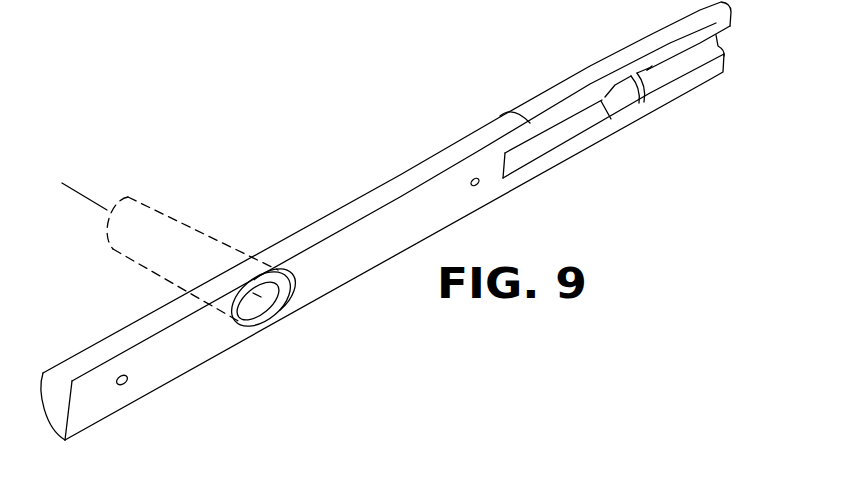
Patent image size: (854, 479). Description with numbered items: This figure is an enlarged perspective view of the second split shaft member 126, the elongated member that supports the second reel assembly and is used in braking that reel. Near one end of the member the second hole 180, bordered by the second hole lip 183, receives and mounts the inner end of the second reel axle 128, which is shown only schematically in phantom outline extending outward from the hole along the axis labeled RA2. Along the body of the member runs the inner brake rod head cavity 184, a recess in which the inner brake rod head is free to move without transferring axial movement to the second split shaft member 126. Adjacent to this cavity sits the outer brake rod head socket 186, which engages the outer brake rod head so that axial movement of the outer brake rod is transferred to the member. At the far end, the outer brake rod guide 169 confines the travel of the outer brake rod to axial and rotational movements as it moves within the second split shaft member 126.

The second split shaft member 126 is at (437, 197).
The second reel axle 128 is at (198, 214).
The rotation axis RA2 is at (79, 192).
The outer brake rod guide 169 is at (692, 62).
The second hole 180 is at (282, 297).
The second hole lip 183 is at (243, 317).
The inner brake rod head cavity 184 is at (573, 132).
The outer brake rod head socket 186 is at (627, 107).